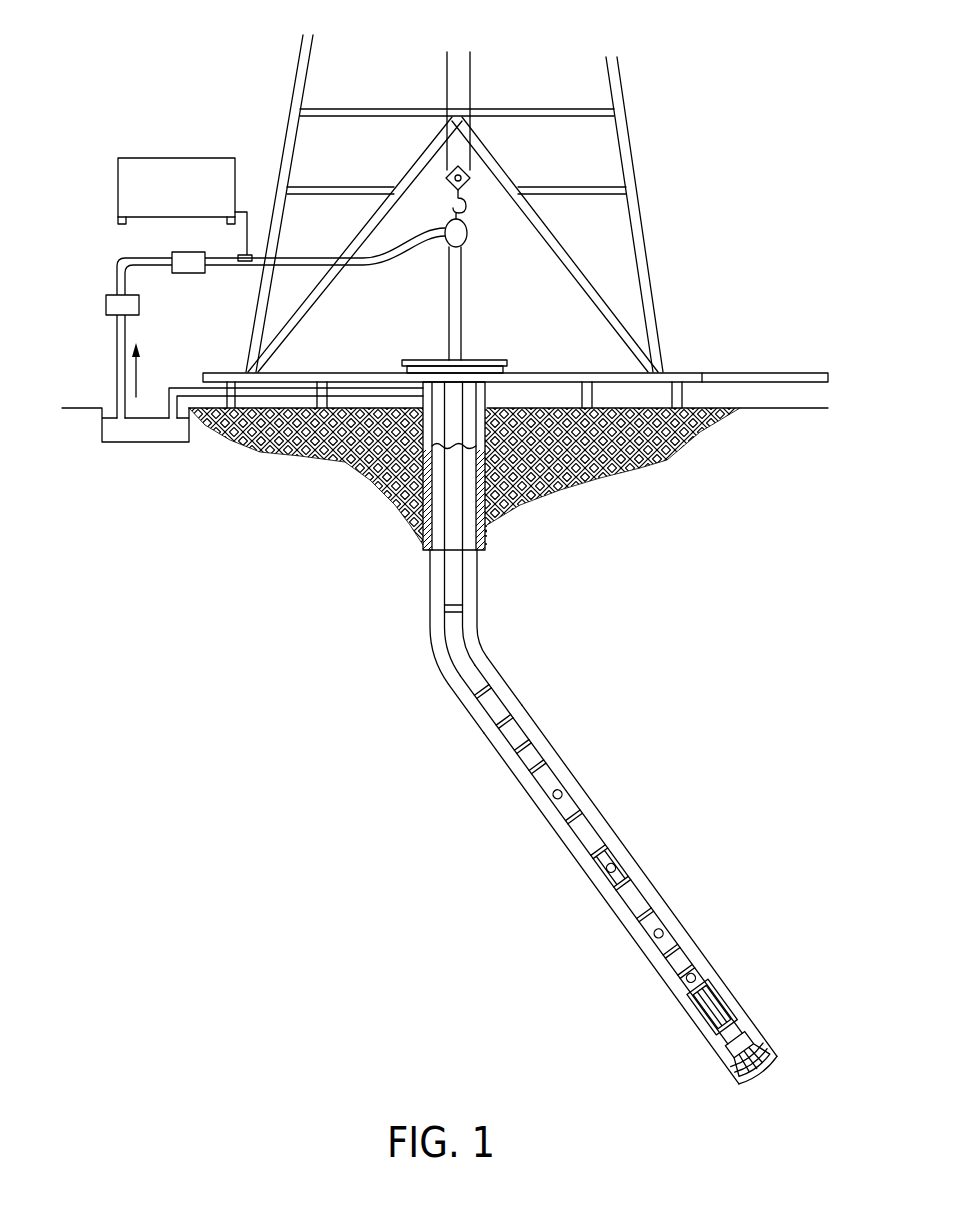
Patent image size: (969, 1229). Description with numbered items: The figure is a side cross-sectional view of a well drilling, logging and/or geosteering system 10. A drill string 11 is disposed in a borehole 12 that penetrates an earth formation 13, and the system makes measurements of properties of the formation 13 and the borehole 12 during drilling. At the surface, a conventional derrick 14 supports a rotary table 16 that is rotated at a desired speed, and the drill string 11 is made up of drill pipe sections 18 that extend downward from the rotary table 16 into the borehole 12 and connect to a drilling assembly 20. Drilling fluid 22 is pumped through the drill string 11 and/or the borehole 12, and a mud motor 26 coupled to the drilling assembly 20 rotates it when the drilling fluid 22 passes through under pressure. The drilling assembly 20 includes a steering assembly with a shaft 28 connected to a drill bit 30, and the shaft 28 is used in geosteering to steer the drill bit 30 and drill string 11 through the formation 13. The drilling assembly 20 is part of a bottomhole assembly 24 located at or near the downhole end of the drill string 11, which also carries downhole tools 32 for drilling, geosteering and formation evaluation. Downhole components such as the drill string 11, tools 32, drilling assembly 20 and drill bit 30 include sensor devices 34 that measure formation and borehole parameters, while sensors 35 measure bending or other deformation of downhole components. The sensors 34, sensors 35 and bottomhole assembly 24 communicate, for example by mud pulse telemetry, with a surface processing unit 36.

The well drilling, logging and/or geosteering system 10 is at (404, 68).
The drill string 11 is at (478, 580).
The borehole 12 is at (483, 652).
The earth formation 13 is at (545, 468).
The derrick 14 is at (648, 242).
The rotary table 16 is at (470, 358).
The drill pipe sections 18 is at (443, 588).
The drilling assembly 20 is at (778, 1023).
The drilling fluid 22 is at (110, 432).
The bottomhole assembly 24 is at (759, 913).
The mud motor 26 is at (556, 773).
The shaft 28 is at (733, 1032).
The drill bit 30 is at (772, 1063).
The downhole tools 32 is at (681, 913).
The sensor devices 34 is at (645, 885).
The sensors 35 is at (555, 800).
The surface processing unit 36 is at (145, 158).